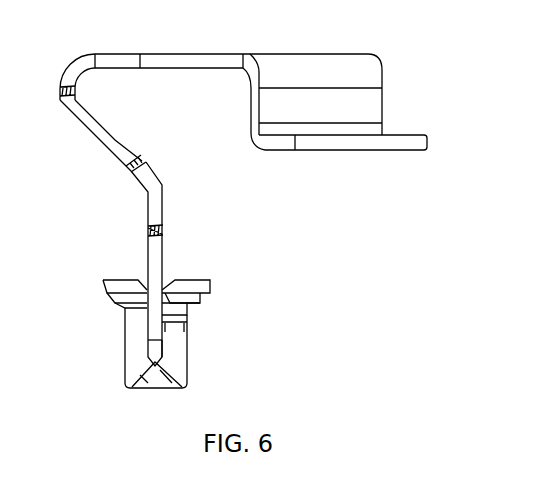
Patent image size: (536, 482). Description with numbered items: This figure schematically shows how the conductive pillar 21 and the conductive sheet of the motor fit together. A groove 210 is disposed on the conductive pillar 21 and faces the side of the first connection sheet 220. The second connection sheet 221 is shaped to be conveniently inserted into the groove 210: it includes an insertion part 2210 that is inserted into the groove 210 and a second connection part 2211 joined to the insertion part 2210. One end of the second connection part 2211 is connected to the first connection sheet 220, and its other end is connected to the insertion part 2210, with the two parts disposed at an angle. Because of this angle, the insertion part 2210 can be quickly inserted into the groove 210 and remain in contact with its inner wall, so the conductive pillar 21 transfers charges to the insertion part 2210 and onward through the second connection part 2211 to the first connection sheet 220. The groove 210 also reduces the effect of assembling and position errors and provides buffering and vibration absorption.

The first connection sheet 220 is at (170, 62).
The second connection sheet 221 is at (192, 233).
The second connection part 2211 is at (157, 185).
The insertion part 2210 is at (166, 244).
The conductive pillar 21 is at (189, 334).
The groove 210 is at (163, 332).